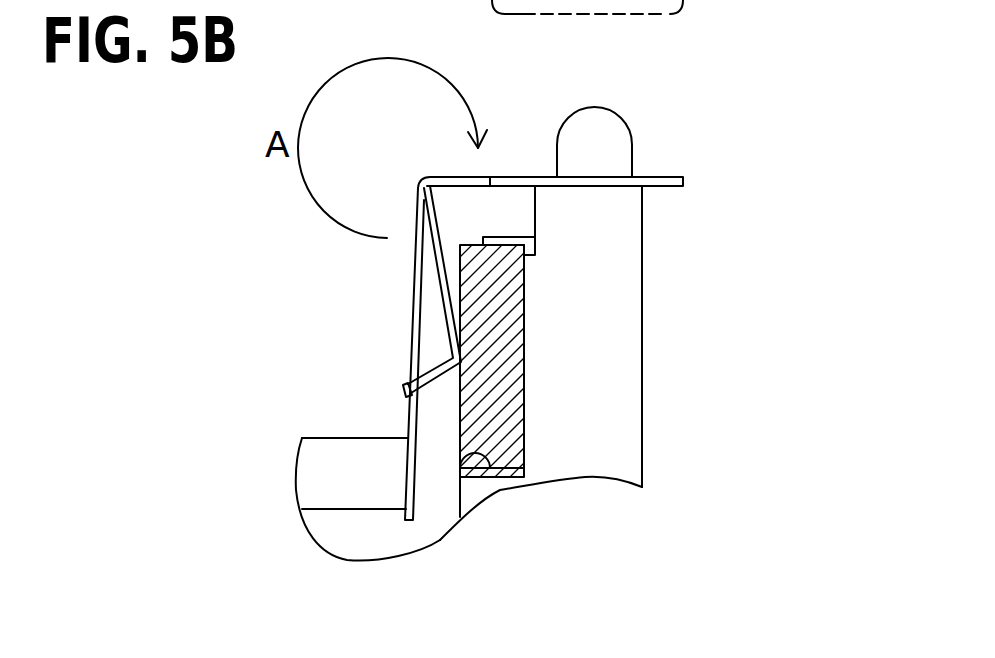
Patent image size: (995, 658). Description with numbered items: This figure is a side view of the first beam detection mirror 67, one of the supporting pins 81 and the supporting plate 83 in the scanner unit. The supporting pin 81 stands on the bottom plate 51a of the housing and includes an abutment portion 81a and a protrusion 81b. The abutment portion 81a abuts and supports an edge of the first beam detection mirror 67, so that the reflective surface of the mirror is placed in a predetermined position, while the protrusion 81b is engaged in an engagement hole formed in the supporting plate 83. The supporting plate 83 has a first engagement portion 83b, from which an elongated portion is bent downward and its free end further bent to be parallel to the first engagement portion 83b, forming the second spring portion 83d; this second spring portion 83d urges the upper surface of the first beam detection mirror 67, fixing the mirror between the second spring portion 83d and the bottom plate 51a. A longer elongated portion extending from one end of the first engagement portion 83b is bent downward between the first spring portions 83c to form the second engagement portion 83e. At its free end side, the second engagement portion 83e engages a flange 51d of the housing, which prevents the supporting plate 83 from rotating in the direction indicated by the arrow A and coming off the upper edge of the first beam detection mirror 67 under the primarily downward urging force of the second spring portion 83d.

The supporting plate 83 is at (548, 313).
The first engagement portion 83b is at (657, 178).
The first spring portion 83c is at (440, 287).
The second spring portion 83d is at (518, 243).
The second engagement portion 83e is at (413, 360).
The supporting pin 81 is at (619, 305).
The abutment portion 81a is at (526, 278).
The protrusion 81b is at (605, 128).
The first beam detection mirror 67 is at (516, 411).
The flange 51d is at (328, 465).
The bottom plate 51a is at (475, 450).